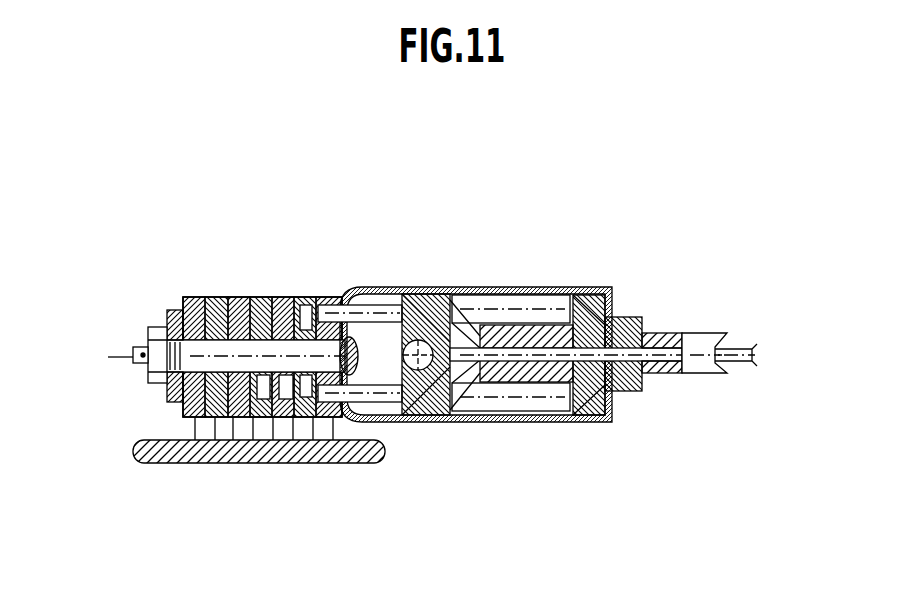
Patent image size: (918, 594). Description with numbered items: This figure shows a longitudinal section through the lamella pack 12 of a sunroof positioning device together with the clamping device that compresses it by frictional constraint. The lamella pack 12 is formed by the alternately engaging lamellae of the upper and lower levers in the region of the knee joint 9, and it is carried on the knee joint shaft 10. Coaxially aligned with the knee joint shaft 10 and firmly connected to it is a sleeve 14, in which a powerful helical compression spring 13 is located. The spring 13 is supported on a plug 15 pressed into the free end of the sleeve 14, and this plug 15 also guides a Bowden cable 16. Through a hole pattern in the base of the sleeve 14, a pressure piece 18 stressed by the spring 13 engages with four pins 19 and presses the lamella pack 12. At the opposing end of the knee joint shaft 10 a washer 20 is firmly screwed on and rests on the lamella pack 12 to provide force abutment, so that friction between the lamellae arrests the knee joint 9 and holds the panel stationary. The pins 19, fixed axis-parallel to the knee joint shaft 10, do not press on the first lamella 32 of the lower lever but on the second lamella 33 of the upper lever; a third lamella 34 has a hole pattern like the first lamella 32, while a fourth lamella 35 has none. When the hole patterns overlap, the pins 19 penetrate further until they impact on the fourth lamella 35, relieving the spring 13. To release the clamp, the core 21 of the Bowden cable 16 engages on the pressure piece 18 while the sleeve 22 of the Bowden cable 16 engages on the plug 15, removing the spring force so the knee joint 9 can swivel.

The knee joint 9 is at (186, 288).
The knee joint shaft 10 is at (132, 357).
The lamella pack 12 is at (336, 200).
The helical compression spring 13 is at (498, 414).
The sleeve 14 is at (498, 287).
The plug 15 is at (618, 305).
The Bowden cable 16 is at (703, 316).
The pressure piece 18 is at (418, 416).
The pins 19 is at (387, 300).
The washer 20 is at (168, 398).
The core 21 is at (745, 346).
The sleeve of the Bowden cable 22 is at (702, 373).
The first lamella 32 is at (337, 294).
The second lamella 33 is at (321, 294).
The third lamella 34 is at (303, 294).
The fourth lamella 35 is at (279, 293).